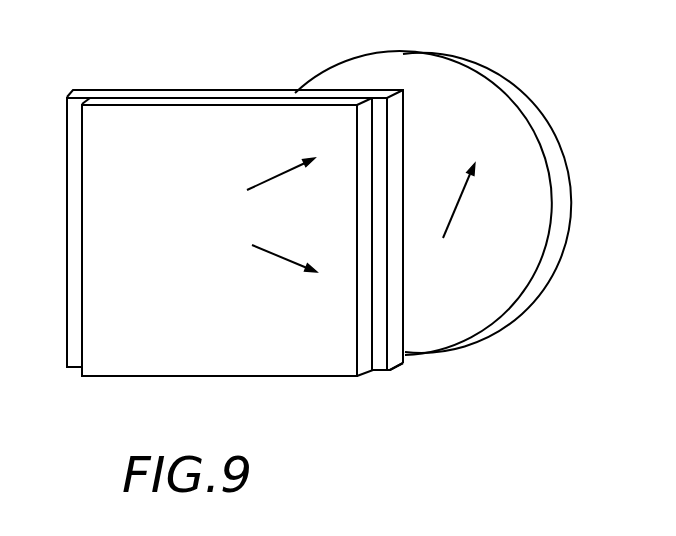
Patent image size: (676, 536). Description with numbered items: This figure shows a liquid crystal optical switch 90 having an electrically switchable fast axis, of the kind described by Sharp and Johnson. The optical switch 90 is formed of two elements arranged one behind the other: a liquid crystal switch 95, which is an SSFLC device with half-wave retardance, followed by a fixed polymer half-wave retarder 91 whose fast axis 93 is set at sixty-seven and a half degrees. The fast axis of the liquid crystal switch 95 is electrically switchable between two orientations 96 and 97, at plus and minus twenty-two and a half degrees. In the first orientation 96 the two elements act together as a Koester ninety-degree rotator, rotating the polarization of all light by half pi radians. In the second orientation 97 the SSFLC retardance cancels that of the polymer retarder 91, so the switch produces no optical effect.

The optical switch 90 is at (275, 54).
The fixed retarder 91 is at (505, 313).
The fast axis 93 is at (460, 192).
The liquid crystal switch 95 is at (390, 370).
The fast axis orientation 96 is at (284, 173).
The fast axis orientation 97 is at (283, 260).